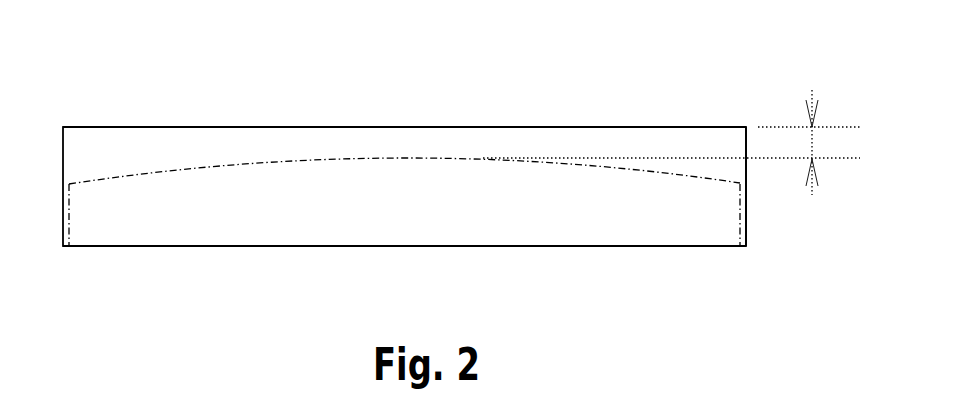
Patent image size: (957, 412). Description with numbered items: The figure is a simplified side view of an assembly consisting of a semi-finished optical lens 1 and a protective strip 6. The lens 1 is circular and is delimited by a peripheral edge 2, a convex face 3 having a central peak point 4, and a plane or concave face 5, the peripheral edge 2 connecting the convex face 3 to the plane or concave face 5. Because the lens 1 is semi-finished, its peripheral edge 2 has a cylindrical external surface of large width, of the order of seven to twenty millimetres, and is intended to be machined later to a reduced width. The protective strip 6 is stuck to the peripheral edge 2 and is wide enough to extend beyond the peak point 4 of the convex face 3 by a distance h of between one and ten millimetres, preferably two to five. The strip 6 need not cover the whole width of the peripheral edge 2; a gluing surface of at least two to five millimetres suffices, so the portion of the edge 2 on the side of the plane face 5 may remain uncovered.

The optical lens 1 is at (245, 203).
The peripheral edge 2 is at (740, 218).
The convex face 3 is at (552, 164).
The central peak point 4 is at (416, 158).
The plane or concave face 5 is at (573, 246).
The protective strip 6 is at (144, 158).
The distance h is at (809, 142).